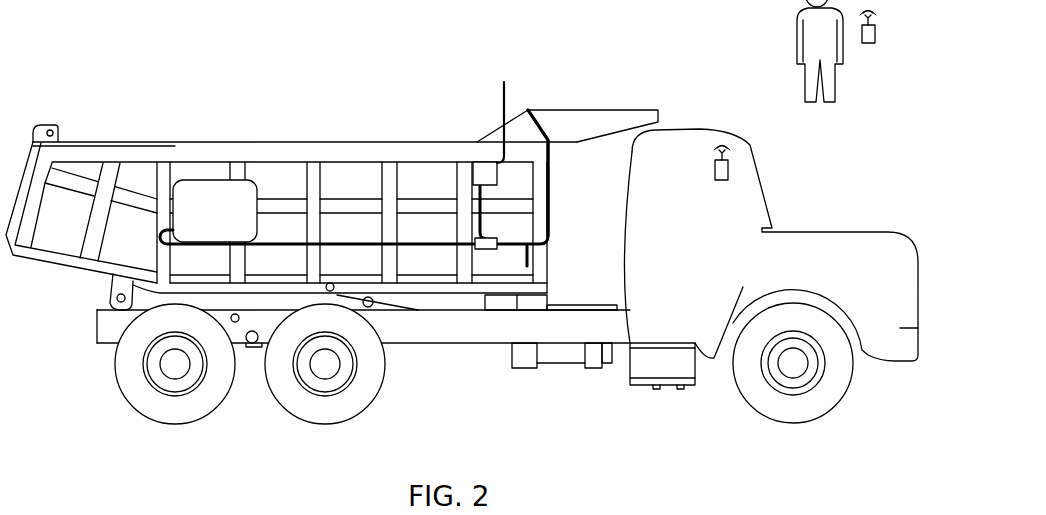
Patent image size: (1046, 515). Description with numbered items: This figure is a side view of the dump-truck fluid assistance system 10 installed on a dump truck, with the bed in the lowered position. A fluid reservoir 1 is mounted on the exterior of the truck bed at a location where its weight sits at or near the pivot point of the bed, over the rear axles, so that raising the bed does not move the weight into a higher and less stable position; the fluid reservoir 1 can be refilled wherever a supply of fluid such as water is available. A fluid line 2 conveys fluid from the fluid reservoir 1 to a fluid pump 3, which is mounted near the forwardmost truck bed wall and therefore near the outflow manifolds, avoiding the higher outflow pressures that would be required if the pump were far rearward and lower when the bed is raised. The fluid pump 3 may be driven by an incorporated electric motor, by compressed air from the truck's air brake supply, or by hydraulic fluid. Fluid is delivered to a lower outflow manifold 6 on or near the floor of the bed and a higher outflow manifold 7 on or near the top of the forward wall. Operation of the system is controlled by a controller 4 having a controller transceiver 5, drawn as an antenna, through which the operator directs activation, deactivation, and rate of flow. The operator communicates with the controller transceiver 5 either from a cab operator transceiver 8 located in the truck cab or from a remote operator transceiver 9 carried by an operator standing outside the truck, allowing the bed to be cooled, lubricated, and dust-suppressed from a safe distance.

The fluid reservoir 1 is at (214, 188).
The fluid line 2 is at (342, 237).
The fluid pump 3 is at (493, 242).
The controller 4 is at (476, 162).
The controller transceiver 5 is at (503, 107).
The lower outflow manifold 6 is at (549, 264).
The higher outflow manifold 7 is at (537, 94).
The cab operator transceiver 8 is at (729, 170).
The remote operator transceiver 9 is at (876, 37).
The dump-truck fluid assistance system 10 is at (162, 56).